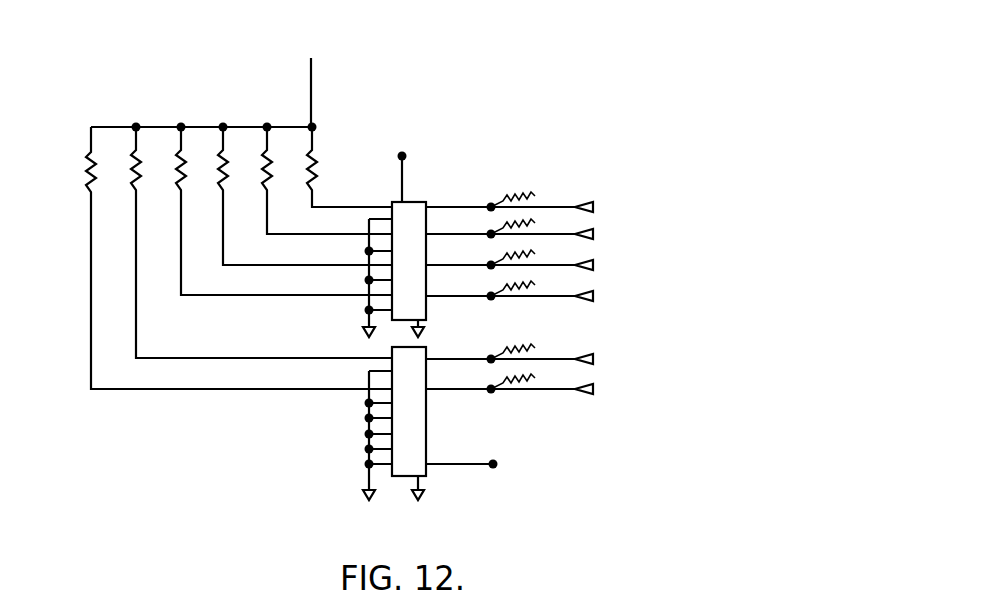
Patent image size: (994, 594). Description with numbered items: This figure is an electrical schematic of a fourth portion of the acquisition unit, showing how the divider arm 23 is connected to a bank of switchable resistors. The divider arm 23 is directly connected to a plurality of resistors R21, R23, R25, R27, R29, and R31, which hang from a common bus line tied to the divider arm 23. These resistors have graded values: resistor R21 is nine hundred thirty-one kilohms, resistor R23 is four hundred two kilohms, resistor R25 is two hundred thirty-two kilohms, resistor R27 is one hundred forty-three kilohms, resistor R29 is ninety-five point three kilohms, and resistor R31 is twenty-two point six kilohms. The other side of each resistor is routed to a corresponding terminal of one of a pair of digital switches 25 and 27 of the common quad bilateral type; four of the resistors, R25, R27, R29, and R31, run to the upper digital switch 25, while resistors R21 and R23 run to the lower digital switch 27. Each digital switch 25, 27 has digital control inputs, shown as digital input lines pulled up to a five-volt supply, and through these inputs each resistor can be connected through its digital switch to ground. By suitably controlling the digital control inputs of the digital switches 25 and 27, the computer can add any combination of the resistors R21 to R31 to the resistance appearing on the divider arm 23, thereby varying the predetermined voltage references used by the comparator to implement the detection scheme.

The divider arm 23 is at (311, 105).
The digital switch 25 is at (404, 202).
The digital switch 27 is at (422, 347).
The resistor R21 is at (87, 152).
The resistor R23 is at (131, 160).
The resistor R25 is at (176, 164).
The resistor R27 is at (218, 164).
The resistor R29 is at (262, 164).
The resistor R31 is at (315, 160).